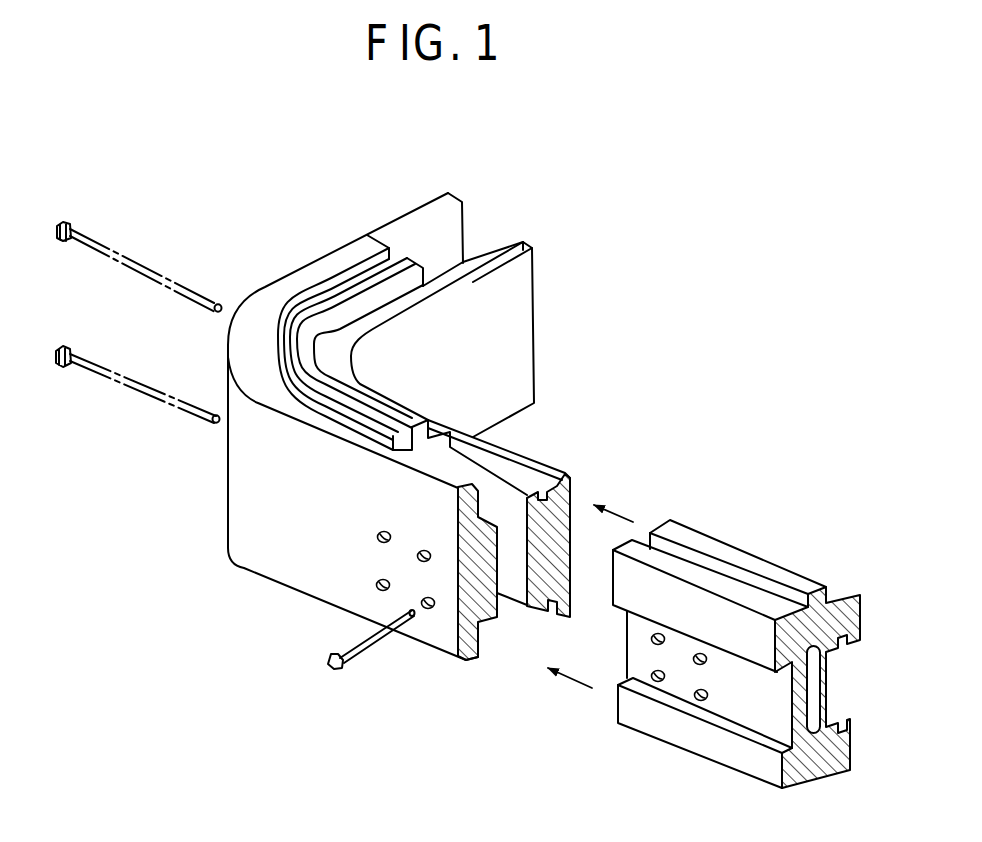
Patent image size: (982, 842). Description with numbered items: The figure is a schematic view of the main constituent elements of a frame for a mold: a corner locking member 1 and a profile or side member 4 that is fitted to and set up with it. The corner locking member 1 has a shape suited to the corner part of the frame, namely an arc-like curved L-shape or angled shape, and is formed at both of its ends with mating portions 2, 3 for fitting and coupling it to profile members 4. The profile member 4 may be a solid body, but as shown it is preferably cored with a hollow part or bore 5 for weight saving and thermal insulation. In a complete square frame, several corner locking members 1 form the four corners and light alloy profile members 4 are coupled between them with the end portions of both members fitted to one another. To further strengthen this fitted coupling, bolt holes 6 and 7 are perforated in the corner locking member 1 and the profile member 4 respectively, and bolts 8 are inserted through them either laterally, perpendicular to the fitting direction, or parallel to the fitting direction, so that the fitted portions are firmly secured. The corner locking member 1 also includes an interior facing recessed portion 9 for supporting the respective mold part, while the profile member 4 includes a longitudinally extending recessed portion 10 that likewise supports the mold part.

The corner locking member 1 is at (272, 570).
The mating portion 2 is at (515, 467).
The mating portion 3 is at (457, 232).
The profile member 4 is at (760, 552).
The hollow part or bore 5 is at (813, 680).
The bolt holes 6 is at (380, 588).
The bolt holes 7 is at (700, 701).
The bolts 8 is at (136, 397).
The interior facing recessed portion 9 is at (337, 354).
The longitudinally extending recessed portion 10 is at (803, 578).